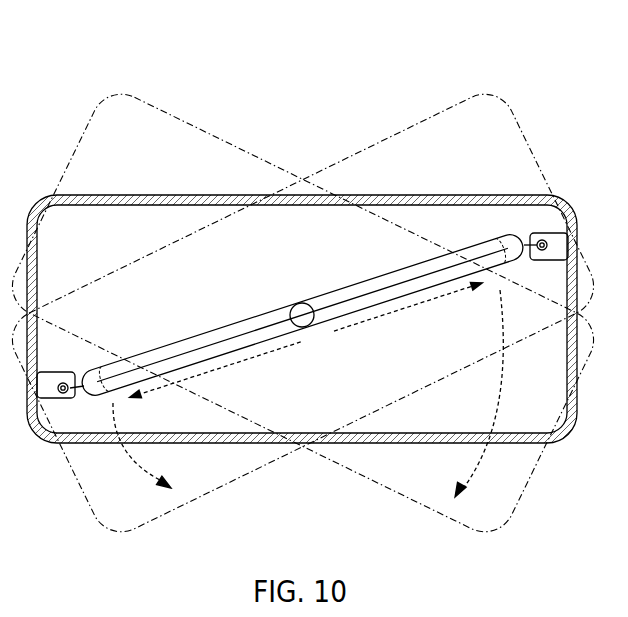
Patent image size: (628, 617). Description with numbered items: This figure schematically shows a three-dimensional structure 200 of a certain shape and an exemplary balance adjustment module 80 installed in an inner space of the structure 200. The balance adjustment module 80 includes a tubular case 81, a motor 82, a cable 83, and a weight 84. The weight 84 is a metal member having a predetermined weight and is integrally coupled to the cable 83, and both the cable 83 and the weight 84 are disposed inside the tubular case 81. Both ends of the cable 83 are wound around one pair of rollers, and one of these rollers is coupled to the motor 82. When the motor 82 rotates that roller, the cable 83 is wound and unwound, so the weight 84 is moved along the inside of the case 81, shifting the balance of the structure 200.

The balance adjustment module 80 is at (303, 214).
The case 81 is at (302, 314).
The motor 82 is at (546, 158).
The cable 83 is at (302, 314).
The weight 84 is at (299, 303).
The 3D structure 200 is at (563, 437).